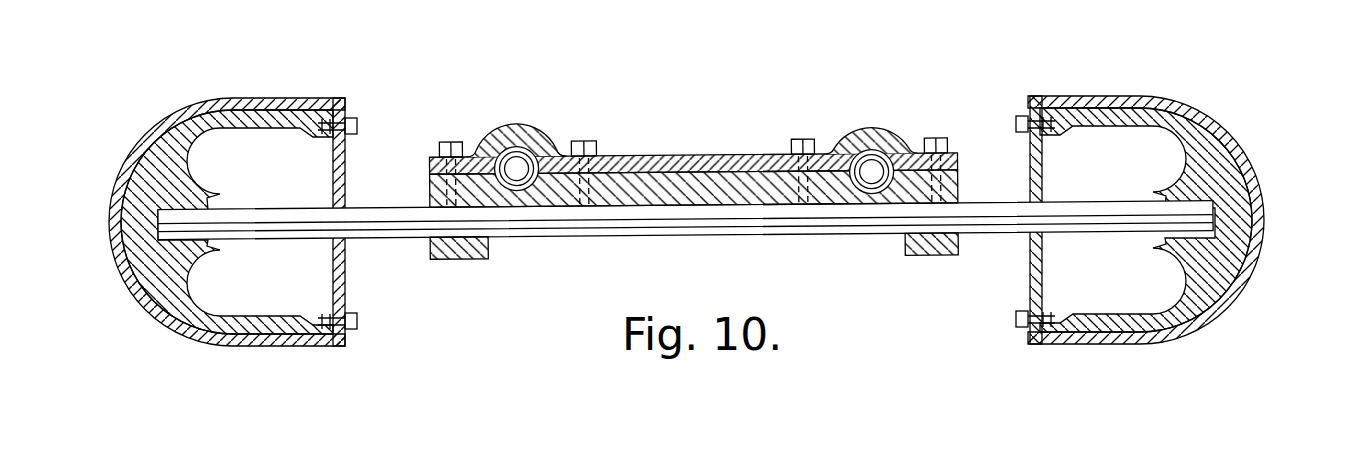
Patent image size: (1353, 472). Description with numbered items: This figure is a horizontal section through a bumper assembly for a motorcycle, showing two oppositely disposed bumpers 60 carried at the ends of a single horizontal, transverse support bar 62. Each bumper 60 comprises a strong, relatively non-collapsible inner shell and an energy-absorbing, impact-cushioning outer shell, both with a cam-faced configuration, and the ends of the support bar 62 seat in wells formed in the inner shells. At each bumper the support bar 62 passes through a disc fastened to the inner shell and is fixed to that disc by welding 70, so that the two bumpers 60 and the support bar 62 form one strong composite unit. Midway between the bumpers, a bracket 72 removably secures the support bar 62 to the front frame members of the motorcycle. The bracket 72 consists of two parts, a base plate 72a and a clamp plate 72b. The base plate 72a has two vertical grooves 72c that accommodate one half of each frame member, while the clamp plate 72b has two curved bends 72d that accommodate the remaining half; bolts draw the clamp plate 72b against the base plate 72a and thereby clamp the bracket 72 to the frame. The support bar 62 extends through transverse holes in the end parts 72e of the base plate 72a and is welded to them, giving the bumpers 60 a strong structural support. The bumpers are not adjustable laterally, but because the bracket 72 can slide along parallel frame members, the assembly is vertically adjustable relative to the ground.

The bumper 60 is at (146, 118).
The support bar 62 is at (1093, 228).
The welding 70 is at (1028, 196).
The bracket 72 is at (676, 195).
The base plate 72a is at (648, 182).
The clamp plate 72b is at (735, 158).
The vertical groove 72c is at (523, 195).
The curved bend 72d is at (870, 133).
The end part 72e is at (442, 260).